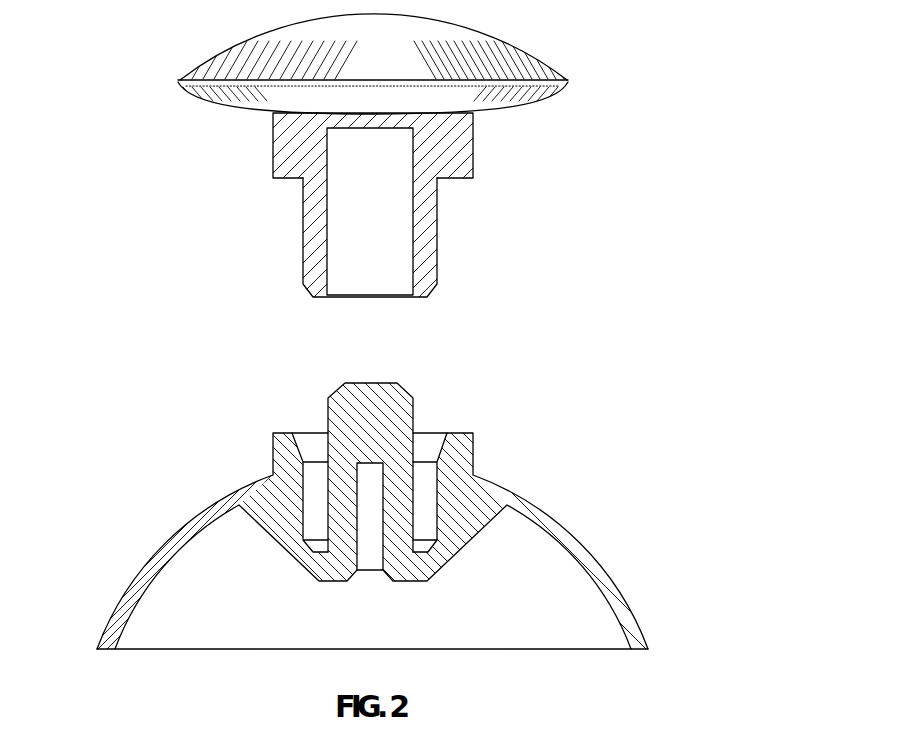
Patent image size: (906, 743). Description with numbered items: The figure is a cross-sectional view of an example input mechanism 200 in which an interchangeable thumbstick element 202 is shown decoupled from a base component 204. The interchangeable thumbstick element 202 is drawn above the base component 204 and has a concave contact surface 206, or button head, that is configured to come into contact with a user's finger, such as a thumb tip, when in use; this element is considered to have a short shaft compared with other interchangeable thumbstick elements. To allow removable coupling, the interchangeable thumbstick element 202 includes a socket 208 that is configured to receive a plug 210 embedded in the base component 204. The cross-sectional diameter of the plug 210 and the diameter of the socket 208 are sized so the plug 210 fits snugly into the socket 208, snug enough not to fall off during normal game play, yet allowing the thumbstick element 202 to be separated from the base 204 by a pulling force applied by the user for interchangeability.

The input mechanism 200 is at (101, 90).
The interchangeable thumbstick element 202 is at (287, 140).
The base component 204 is at (182, 537).
The concave contact surface 206 is at (413, 41).
The socket 208 is at (423, 252).
The plug 210 is at (407, 395).